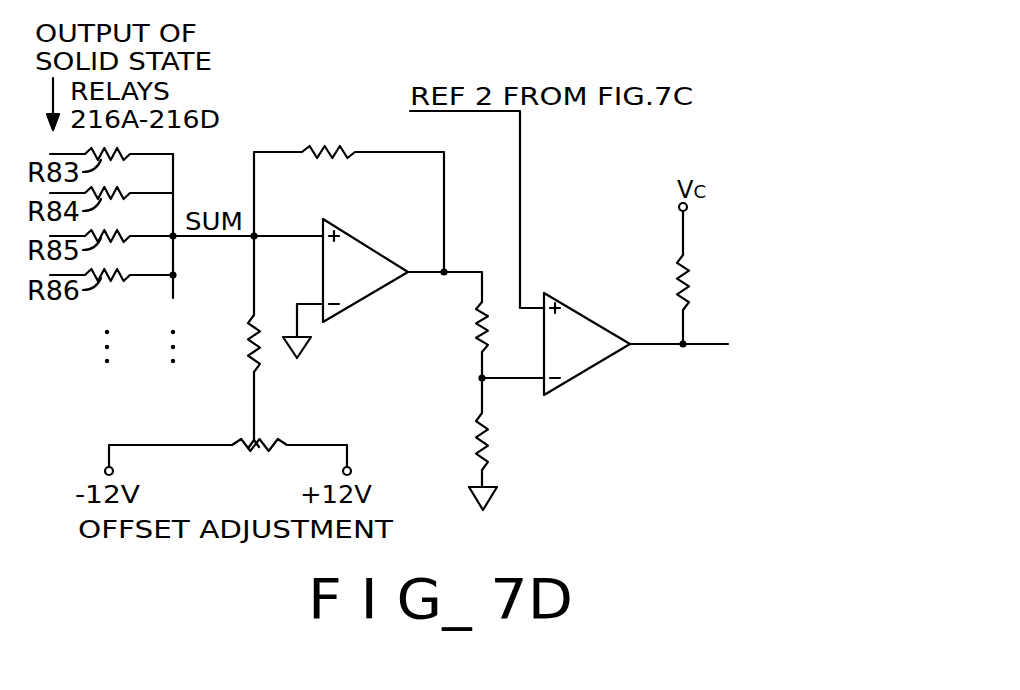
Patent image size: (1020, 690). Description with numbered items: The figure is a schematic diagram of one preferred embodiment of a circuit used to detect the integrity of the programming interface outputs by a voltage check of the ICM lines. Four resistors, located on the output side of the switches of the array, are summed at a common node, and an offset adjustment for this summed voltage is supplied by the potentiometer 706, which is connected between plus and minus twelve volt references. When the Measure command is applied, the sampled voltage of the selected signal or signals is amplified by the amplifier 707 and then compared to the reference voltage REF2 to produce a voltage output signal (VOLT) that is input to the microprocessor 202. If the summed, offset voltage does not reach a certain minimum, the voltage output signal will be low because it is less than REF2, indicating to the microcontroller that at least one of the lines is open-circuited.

The amplifier 707 is at (365, 297).
The potentiometer 706 is at (253, 442).
The microprocessor (output connection) 202 is at (765, 359).